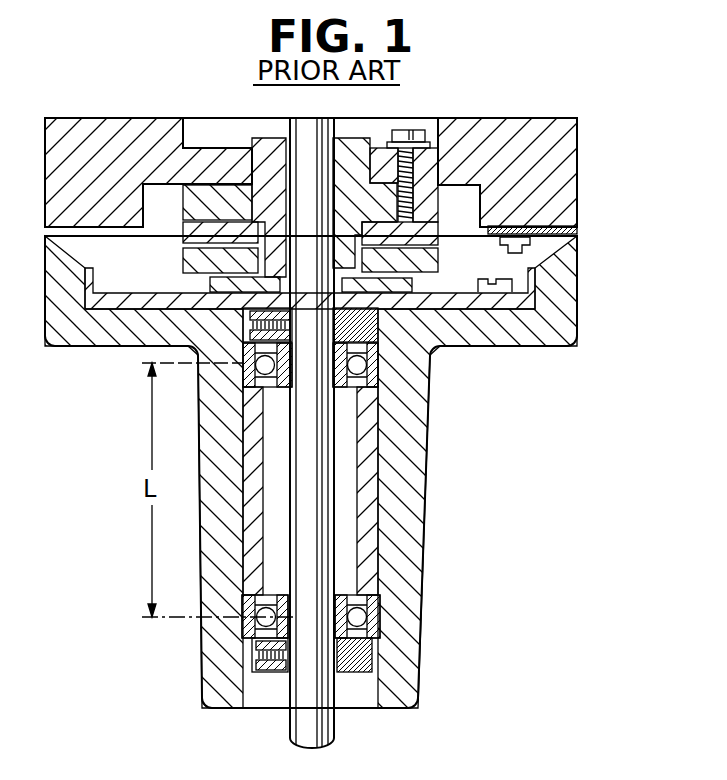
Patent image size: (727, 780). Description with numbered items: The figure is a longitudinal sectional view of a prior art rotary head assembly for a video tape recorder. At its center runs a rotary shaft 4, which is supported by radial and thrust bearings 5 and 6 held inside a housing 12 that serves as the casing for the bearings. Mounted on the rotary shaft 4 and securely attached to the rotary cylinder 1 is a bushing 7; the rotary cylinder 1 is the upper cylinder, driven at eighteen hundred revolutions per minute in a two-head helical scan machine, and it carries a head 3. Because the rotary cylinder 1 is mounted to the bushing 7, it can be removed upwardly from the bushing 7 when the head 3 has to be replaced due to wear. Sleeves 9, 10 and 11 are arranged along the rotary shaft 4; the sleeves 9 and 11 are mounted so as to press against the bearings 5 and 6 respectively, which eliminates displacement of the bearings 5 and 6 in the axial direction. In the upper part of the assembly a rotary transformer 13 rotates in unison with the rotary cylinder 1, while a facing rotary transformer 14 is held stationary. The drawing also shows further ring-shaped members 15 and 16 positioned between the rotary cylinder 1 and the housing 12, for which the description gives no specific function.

The rotary cylinder 1 is at (527, 130).
The head 3 is at (578, 233).
The rotary shaft 4 is at (323, 472).
The radial and thrust bearing 5 is at (372, 372).
The radial and thrust bearing 6 is at (380, 617).
The bushing 7 is at (220, 153).
The sleeve 9 is at (248, 335).
The sleeve 10 is at (255, 510).
The sleeve 11 is at (260, 673).
The housing 12 is at (415, 424).
The rotary transformer 13 is at (192, 227).
The rotary transformer 14 is at (183, 257).
The ring 15 is at (210, 285).
The plate 16 is at (458, 300).